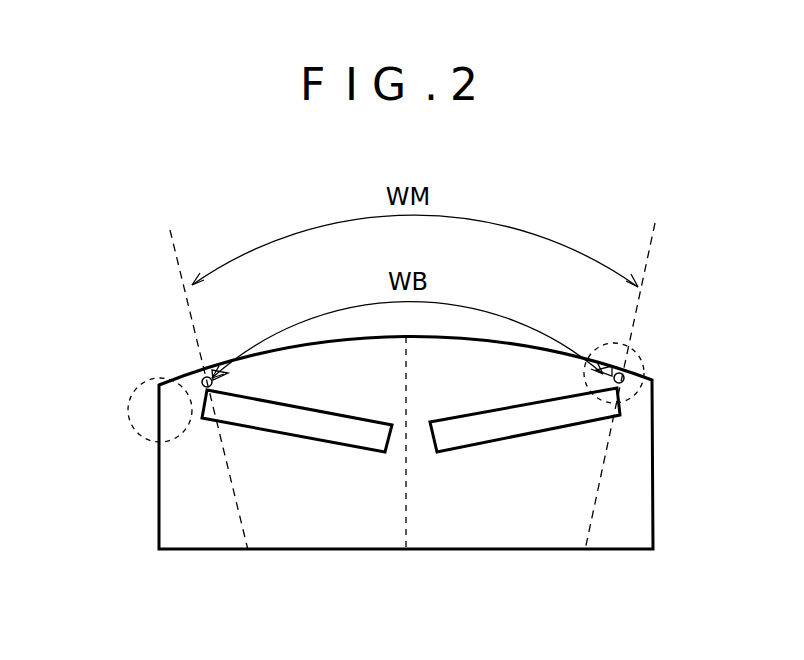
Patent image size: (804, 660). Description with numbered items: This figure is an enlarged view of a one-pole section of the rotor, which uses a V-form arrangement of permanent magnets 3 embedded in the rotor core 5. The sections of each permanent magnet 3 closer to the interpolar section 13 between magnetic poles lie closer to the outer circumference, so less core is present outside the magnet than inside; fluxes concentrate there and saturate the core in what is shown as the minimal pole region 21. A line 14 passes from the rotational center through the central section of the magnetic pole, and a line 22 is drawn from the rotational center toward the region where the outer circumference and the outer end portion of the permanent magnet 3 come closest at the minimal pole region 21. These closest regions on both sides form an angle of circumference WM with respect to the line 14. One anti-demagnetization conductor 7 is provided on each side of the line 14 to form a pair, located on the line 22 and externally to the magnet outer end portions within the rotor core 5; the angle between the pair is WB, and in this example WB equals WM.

The permanent magnet 3 is at (570, 408).
The rotor core 5 is at (648, 528).
The anti-demagnetization conductor 7 is at (194, 378).
The interpolar section 13 is at (128, 408).
The line passing through central section of magnetic poles 14 is at (407, 512).
The minimal pole region 21 is at (642, 396).
The line from rotational center 22 is at (176, 262).